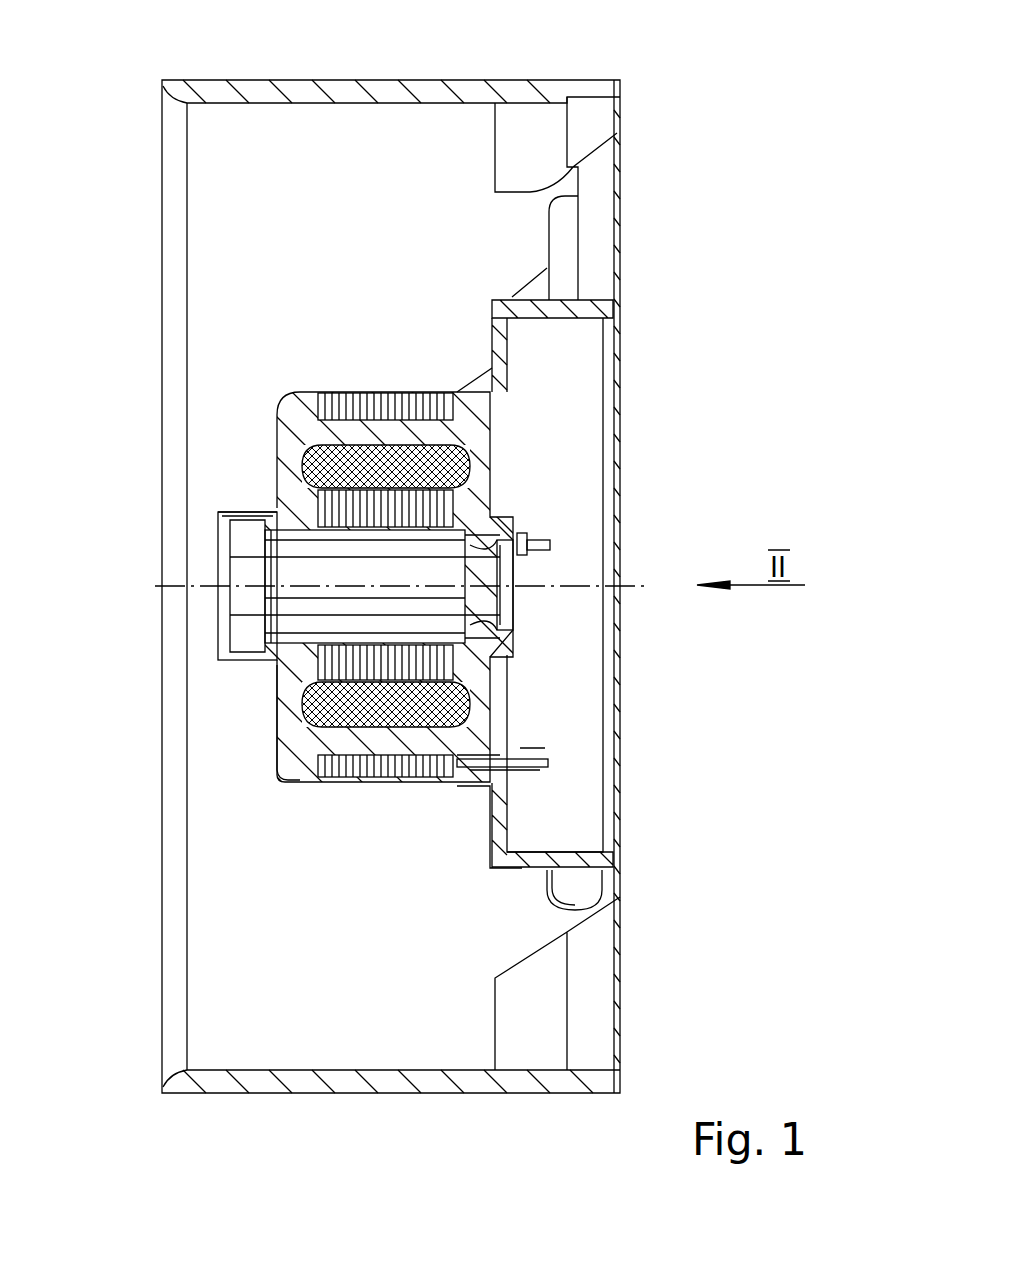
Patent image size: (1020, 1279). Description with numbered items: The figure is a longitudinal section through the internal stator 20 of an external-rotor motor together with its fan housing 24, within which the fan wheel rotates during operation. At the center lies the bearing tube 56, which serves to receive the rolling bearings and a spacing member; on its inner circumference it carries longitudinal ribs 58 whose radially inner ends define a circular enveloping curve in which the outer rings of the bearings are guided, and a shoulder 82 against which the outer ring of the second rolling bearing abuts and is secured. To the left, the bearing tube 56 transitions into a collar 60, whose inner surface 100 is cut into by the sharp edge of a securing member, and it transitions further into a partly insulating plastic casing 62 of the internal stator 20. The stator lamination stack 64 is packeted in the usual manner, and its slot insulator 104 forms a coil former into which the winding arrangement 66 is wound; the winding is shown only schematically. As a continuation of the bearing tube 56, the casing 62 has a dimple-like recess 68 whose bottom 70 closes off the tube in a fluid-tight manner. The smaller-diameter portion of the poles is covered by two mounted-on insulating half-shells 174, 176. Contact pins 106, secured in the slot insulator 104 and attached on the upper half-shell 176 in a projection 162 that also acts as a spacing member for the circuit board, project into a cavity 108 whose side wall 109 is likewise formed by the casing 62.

The internal stator 20 is at (257, 380).
The fan housing 24 is at (178, 88).
The bearing tube 56 is at (288, 615).
The longitudinal ribs 58 is at (332, 580).
The collar 60 is at (242, 512).
The casing 62 is at (490, 673).
The stator lamination stack 64 is at (348, 390).
The winding arrangement 66 is at (285, 450).
The dimple-like recess 68 is at (475, 625).
The bottom 70 is at (508, 618).
The shoulder 82 is at (513, 522).
The inner surface 100 is at (242, 648).
The slot insulator 104 is at (300, 764).
The contact pins 106 is at (552, 538).
The cavity 108 is at (585, 390).
The side wall 109 is at (503, 307).
The projection 162 is at (470, 785).
The half-shell 174 is at (352, 780).
The upper half-shell 176 is at (425, 780).